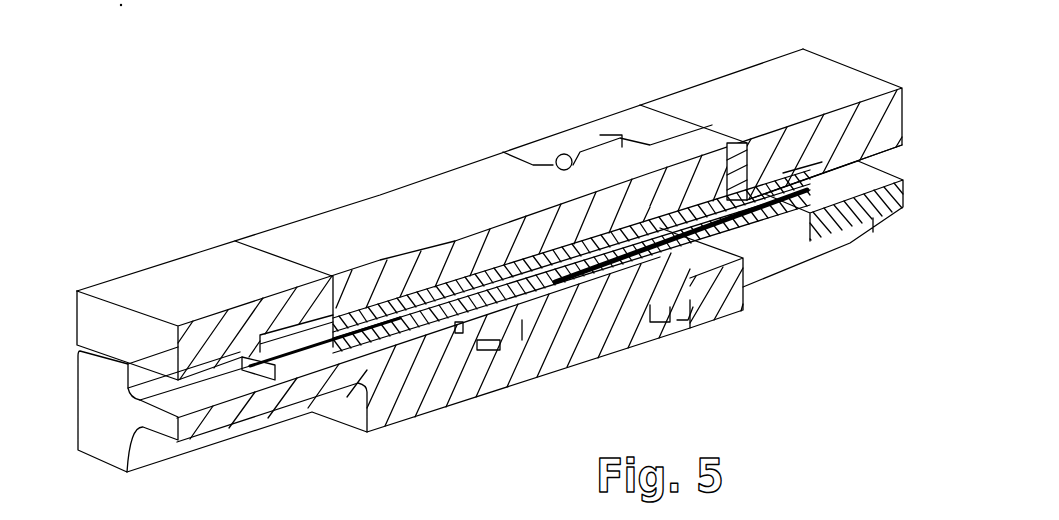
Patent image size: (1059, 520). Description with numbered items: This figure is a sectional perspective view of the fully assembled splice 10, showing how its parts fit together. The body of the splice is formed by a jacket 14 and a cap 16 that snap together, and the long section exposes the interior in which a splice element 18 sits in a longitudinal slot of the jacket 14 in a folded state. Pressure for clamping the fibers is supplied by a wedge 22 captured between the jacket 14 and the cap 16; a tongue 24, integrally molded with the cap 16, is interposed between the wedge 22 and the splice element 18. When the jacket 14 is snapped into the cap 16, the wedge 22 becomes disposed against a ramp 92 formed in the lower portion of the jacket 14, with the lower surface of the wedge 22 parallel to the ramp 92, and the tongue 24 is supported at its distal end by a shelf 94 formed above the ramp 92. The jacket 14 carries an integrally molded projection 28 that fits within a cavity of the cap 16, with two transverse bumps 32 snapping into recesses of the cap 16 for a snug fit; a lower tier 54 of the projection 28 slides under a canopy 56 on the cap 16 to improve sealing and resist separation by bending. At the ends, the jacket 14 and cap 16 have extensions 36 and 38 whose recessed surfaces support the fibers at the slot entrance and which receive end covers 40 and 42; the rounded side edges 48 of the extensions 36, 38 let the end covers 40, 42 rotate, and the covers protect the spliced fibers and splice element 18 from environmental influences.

The splice 10 is at (358, 146).
The jacket 14 is at (376, 434).
The cap 16 is at (530, 143).
The splice element 18 is at (747, 250).
The wedge 22 is at (690, 325).
The tongue 24 is at (490, 345).
The projection 28 is at (608, 152).
The transverse bumps 32 is at (569, 169).
The extension 36 is at (88, 429).
The extension 38 is at (887, 208).
The end cover 40 is at (85, 314).
The end cover 42 is at (822, 80).
The side edges 48 is at (90, 355).
The lower tier 54 is at (729, 143).
The canopy 56 is at (673, 137).
The ramp 92 is at (503, 343).
The shelf 94 is at (457, 333).